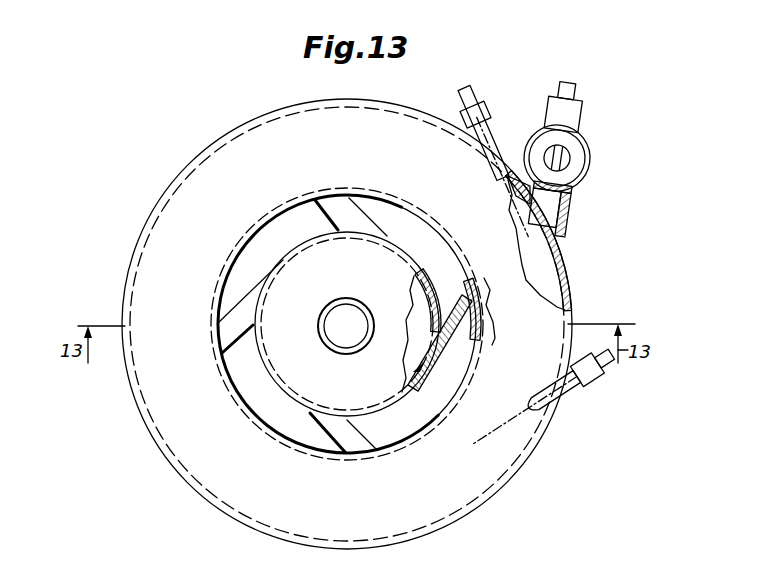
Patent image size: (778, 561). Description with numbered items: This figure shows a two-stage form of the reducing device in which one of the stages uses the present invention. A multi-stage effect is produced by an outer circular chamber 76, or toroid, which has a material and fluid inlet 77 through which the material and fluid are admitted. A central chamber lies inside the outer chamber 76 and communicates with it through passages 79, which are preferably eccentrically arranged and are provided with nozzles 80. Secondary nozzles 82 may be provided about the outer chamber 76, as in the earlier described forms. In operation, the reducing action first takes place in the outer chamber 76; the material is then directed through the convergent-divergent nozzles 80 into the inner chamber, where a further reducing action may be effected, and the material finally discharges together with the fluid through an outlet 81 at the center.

The outer circular chamber 76 is at (163, 237).
The material and fluid inlet 77 is at (570, 123).
The passages 79 is at (348, 220).
The nozzles 80 is at (445, 307).
The outlet 81 is at (343, 340).
The secondary nozzles 82 is at (460, 110).